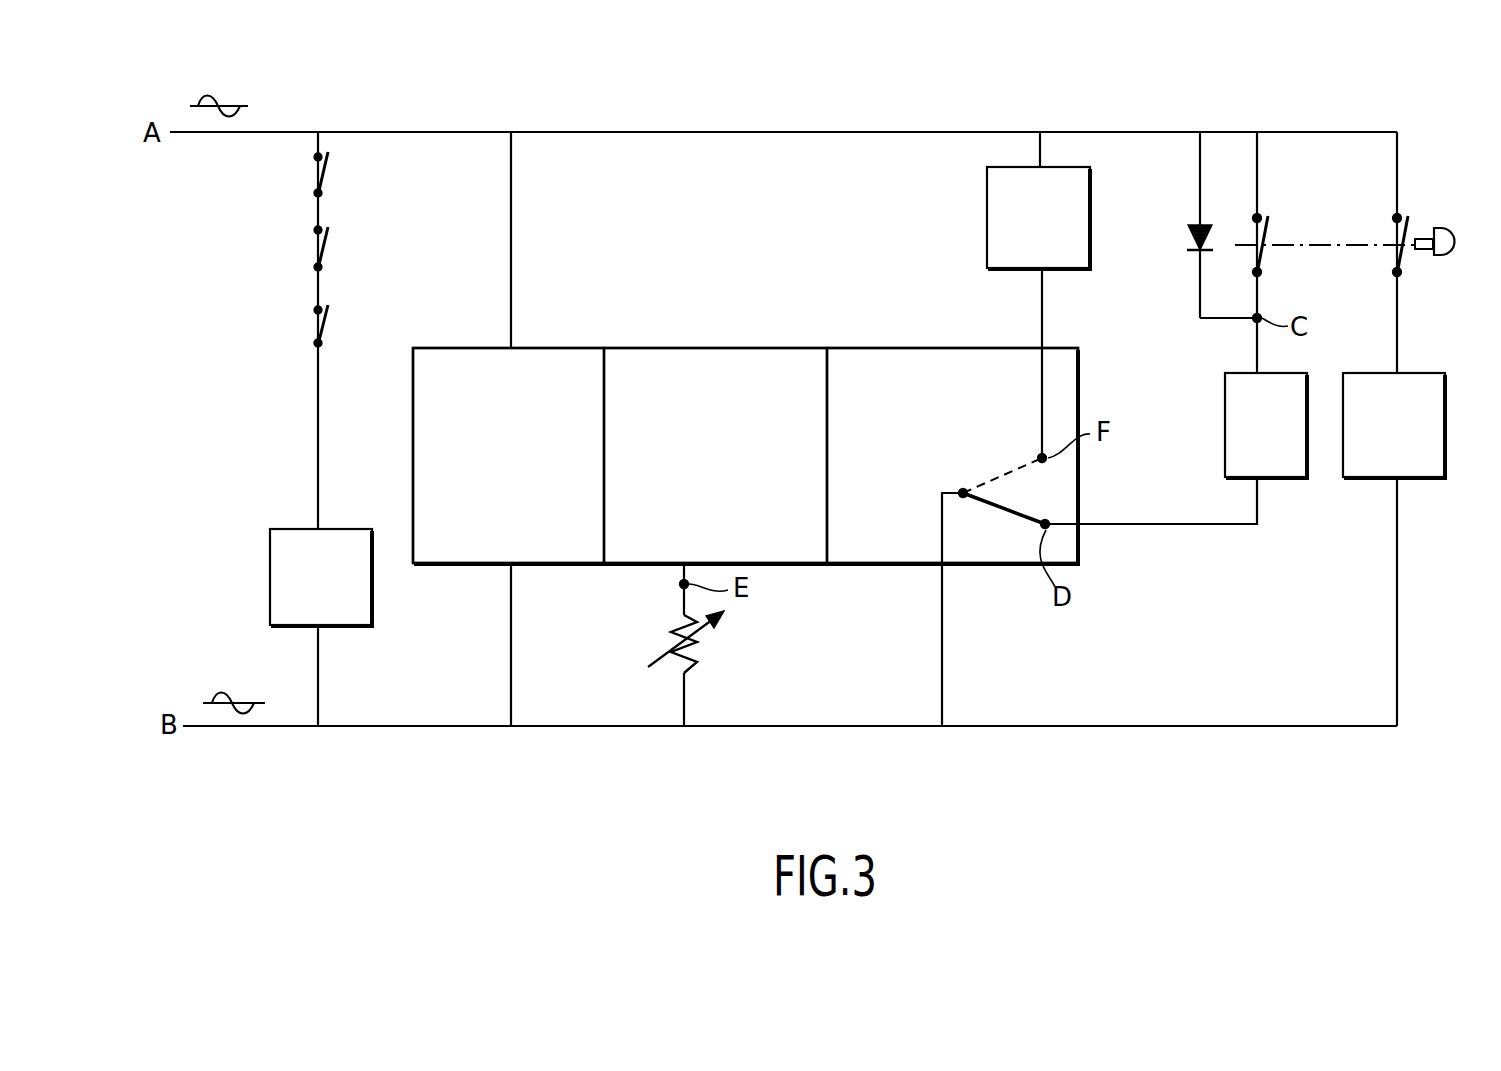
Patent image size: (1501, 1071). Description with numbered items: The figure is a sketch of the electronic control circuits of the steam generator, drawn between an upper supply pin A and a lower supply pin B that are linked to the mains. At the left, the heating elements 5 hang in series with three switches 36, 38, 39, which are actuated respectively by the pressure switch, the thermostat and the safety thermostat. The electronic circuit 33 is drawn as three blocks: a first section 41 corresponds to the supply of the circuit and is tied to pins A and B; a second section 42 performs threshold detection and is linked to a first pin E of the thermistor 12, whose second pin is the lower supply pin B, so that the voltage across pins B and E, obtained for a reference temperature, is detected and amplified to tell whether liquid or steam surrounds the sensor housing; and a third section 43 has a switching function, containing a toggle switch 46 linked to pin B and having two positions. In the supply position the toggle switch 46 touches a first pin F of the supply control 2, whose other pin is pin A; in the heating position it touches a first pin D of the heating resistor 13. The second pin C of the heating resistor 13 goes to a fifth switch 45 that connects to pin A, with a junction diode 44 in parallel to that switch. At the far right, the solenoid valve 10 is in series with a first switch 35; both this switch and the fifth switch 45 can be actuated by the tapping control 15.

The supply control 2 is at (987, 228).
The heating elements 5 is at (270, 590).
The solenoid valve 10 is at (1368, 480).
The thermistor 12 is at (660, 636).
The heating resistor 13 is at (1225, 447).
The tapping control 15 is at (1455, 242).
The electronic circuit 33 is at (745, 381).
The first switch 35 is at (1403, 250).
The switch 36 is at (324, 175).
The switch 38 is at (325, 250).
The switch 39 is at (325, 325).
The first section 41 is at (549, 348).
The second section 42 is at (667, 348).
The third section 43 is at (903, 348).
The junction diode 44 is at (1185, 238).
The fifth switch 45 is at (1263, 250).
The toggle switch 46 is at (1003, 515).